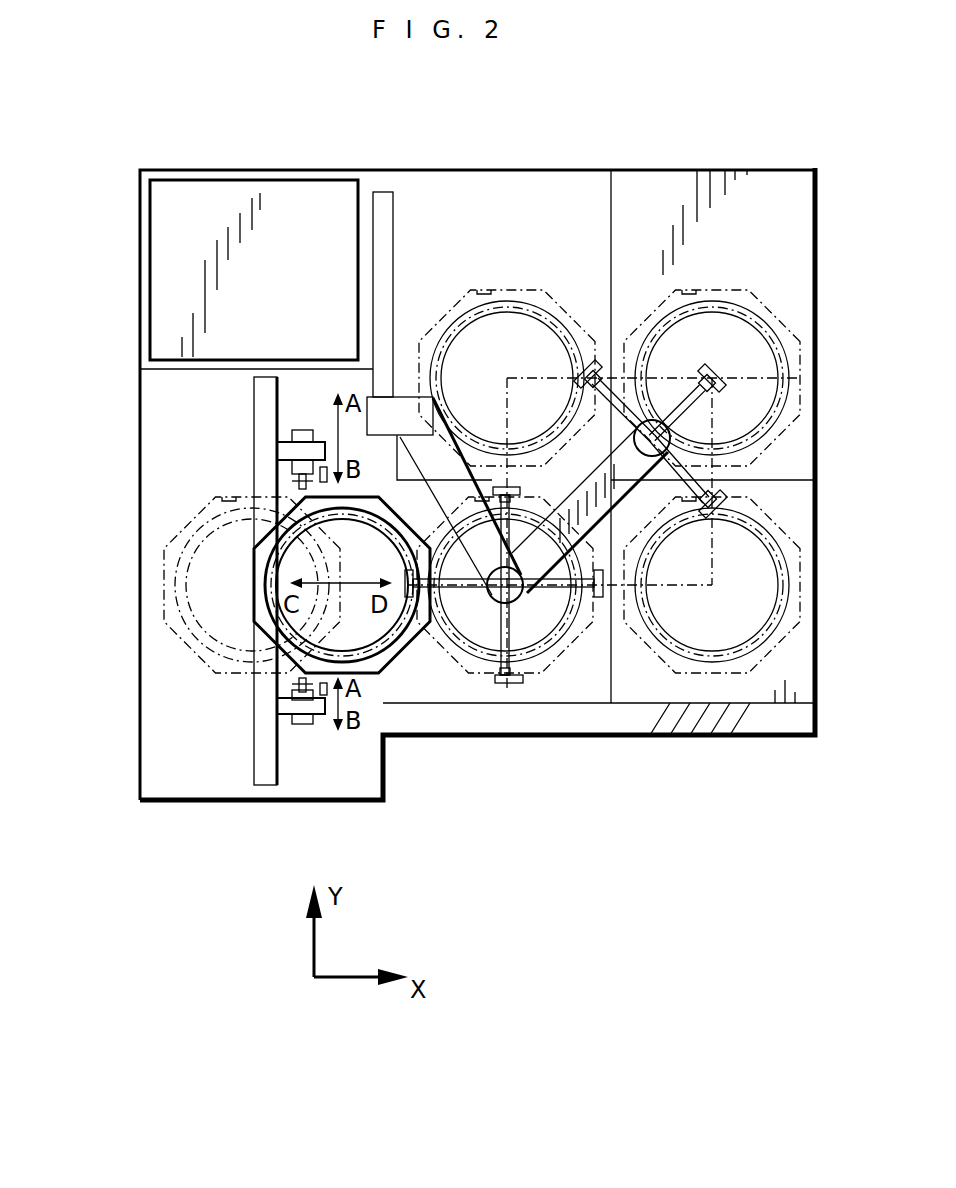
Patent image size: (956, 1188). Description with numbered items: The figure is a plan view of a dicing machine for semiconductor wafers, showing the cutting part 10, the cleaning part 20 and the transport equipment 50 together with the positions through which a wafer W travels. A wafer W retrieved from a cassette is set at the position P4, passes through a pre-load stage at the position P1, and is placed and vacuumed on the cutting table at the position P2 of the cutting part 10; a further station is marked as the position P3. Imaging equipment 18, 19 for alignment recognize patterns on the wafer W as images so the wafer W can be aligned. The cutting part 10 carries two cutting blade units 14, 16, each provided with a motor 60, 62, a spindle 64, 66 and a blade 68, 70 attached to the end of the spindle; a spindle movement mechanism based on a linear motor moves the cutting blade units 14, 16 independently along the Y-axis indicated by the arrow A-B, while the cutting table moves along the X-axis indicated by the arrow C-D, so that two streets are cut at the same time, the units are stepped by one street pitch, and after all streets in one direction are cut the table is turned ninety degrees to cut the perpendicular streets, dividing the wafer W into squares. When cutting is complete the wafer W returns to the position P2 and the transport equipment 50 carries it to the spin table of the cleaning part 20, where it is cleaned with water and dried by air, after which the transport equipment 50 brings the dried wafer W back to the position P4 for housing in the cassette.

The cutting part 10 is at (193, 493).
The cutting blade unit 14 is at (324, 390).
The cutting blade unit 16 is at (316, 790).
The imaging equipment 18 is at (323, 466).
The imaging equipment 19 is at (326, 695).
The cleaning part 20 is at (510, 335).
The transport equipment 50 is at (488, 553).
The motor 60 is at (300, 431).
The motor 62 is at (302, 724).
The spindle 64 is at (292, 468).
The spindle 66 is at (300, 700).
The blade 68 is at (298, 487).
The blade 70 is at (298, 683).
The wafer W is at (497, 305).
The position P1 is at (712, 585).
The position P2 is at (505, 585).
The position P3 is at (507, 378).
The position P4 is at (712, 378).